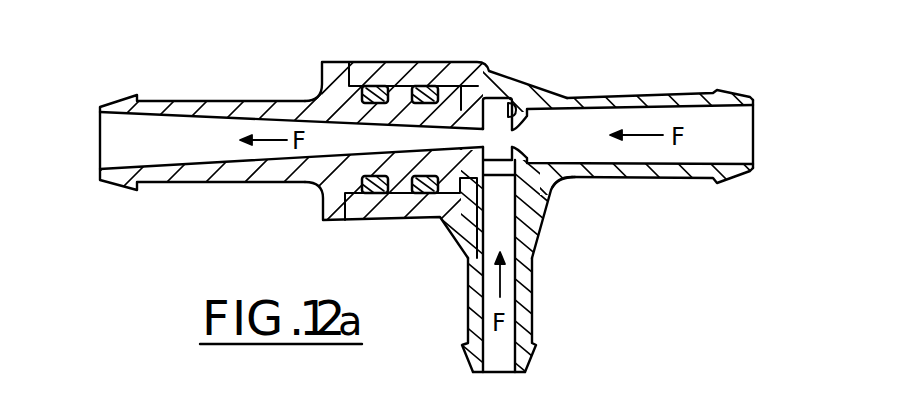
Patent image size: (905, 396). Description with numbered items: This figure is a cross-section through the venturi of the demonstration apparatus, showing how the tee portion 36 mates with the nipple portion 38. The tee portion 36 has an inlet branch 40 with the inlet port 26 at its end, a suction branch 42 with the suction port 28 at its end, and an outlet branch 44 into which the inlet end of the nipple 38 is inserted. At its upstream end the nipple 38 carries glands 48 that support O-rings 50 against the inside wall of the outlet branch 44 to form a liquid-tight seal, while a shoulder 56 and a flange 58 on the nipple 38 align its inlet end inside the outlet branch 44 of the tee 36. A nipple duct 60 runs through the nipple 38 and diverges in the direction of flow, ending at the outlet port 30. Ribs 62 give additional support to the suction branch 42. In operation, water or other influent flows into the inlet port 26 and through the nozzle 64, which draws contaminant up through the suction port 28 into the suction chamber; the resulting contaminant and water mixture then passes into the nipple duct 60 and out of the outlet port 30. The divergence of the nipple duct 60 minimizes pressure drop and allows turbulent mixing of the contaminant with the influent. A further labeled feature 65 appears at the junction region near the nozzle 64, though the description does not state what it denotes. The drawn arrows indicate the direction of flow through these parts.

The inlet port 26 is at (755, 138).
The suction port 28 is at (506, 373).
The outlet port 30 is at (100, 129).
The tee portion 36 is at (530, 95).
The nipple portion 38 is at (452, 103).
The inlet branch 40 is at (663, 100).
The suction branch 42 is at (532, 309).
The outlet branch 44 is at (380, 64).
The gland 48 is at (368, 85).
The O-ring 50 is at (424, 85).
The shoulder 56 is at (449, 194).
The flange 58 is at (328, 221).
The nipple duct 60 is at (143, 130).
The rib 62 is at (543, 232).
The nozzle 64 is at (567, 181).
The central passage 65 is at (512, 96).